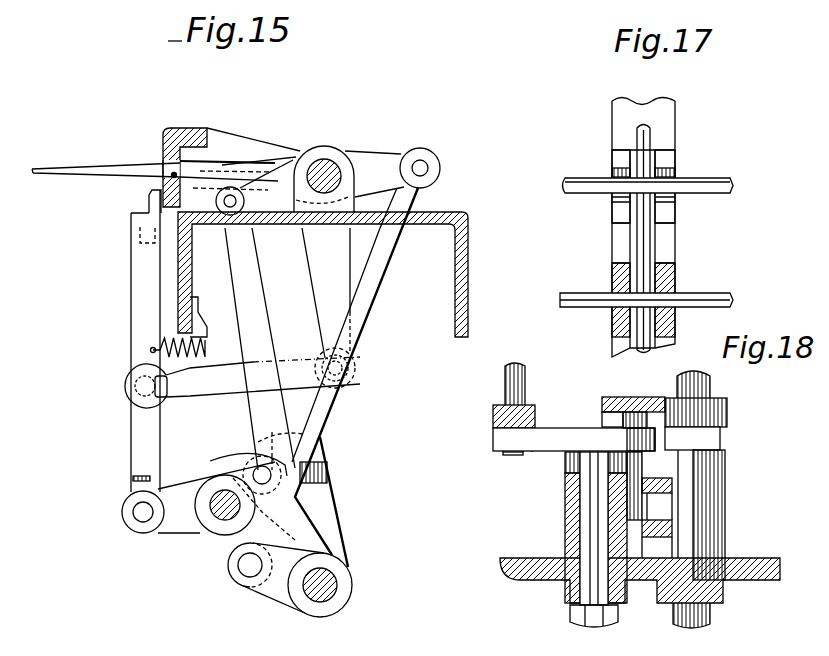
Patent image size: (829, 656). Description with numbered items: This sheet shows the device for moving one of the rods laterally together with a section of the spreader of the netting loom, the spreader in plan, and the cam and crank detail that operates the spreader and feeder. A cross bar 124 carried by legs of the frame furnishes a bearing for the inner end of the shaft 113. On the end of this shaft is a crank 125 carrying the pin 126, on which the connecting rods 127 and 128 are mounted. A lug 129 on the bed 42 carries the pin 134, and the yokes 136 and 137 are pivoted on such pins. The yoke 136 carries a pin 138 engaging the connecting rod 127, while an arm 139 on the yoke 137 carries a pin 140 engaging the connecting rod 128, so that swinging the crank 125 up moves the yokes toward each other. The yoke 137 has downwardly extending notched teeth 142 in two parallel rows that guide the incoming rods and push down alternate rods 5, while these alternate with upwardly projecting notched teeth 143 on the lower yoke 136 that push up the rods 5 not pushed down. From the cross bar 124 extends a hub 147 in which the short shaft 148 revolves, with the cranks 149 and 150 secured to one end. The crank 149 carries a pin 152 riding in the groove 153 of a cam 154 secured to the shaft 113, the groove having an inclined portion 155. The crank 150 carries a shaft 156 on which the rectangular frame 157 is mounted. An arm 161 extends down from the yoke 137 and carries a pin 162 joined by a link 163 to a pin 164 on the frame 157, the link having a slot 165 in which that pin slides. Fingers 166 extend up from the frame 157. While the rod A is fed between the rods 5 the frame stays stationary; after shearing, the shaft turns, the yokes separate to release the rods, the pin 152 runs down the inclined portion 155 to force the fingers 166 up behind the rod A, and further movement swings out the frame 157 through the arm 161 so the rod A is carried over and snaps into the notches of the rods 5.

In FIG. 15, the rods 5 is at (118, 172).
In FIG. 17, the rods 5 is at (573, 193).
In FIG. 15, the rod A is at (163, 163).
In FIG. 17, the rod A is at (644, 247).
In FIG. 15, the bed 42 is at (456, 250).
In FIG. 15, the shaft 113 is at (342, 585).
In FIG. 18, the shaft 113 is at (710, 383).
In FIG. 18, the cross bar 124 is at (520, 568).
In FIG. 15, the crank 125 is at (278, 600).
In FIG. 18, the crank 125 is at (712, 520).
In FIG. 15, the pin 126 is at (250, 567).
In FIG. 15, the connecting rod 127 is at (262, 413).
In FIG. 18, the connecting rod 127 is at (648, 537).
In FIG. 15, the connecting rod 128 is at (366, 316).
In FIG. 18, the connecting rod 128 is at (657, 478).
In FIG. 15, the lug 129 is at (330, 156).
In FIG. 15, the pin 134 is at (325, 163).
In FIG. 15, the yoke 136 is at (228, 169).
In FIG. 17, the yoke 136 is at (620, 247).
In FIG. 15, the yoke 137 is at (253, 146).
In FIG. 15, the pin 138 is at (236, 202).
In FIG. 15, the arm 139 is at (374, 174).
In FIG. 15, the pin 140 is at (428, 167).
In FIG. 17, the teeth 142 is at (672, 279).
In FIG. 17, the teeth 143 is at (618, 213).
In FIG. 18, the hub 147 is at (565, 522).
In FIG. 15, the short shaft 148 is at (223, 513).
In FIG. 18, the short shaft 148 is at (592, 565).
In FIG. 15, the crank 149 is at (240, 470).
In FIG. 18, the crank 149 is at (620, 438).
In FIG. 15, the crank 150 is at (177, 492).
In FIG. 18, the crank 150 is at (555, 442).
In FIG. 15, the pin 152 is at (258, 466).
In FIG. 18, the pin 152 is at (635, 415).
In FIG. 15, the groove 153 is at (327, 472).
In FIG. 18, the groove 153 is at (612, 406).
In FIG. 15, the cam 154 is at (323, 502).
In FIG. 18, the cam 154 is at (697, 410).
In FIG. 15, the inclined portion 155 is at (280, 445).
In FIG. 15, the shaft 156 is at (143, 513).
In FIG. 18, the shaft 156 is at (512, 382).
In FIG. 15, the rectangular frame 157 is at (138, 340).
In FIG. 18, the rectangular frame 157 is at (493, 418).
In FIG. 15, the arm 161 is at (326, 293).
In FIG. 15, the pin 162 is at (343, 376).
In FIG. 15, the link 163 is at (242, 382).
In FIG. 15, the pin 164 is at (137, 387).
In FIG. 15, the slot 165 is at (168, 386).
In FIG. 15, the fingers 166 is at (149, 203).